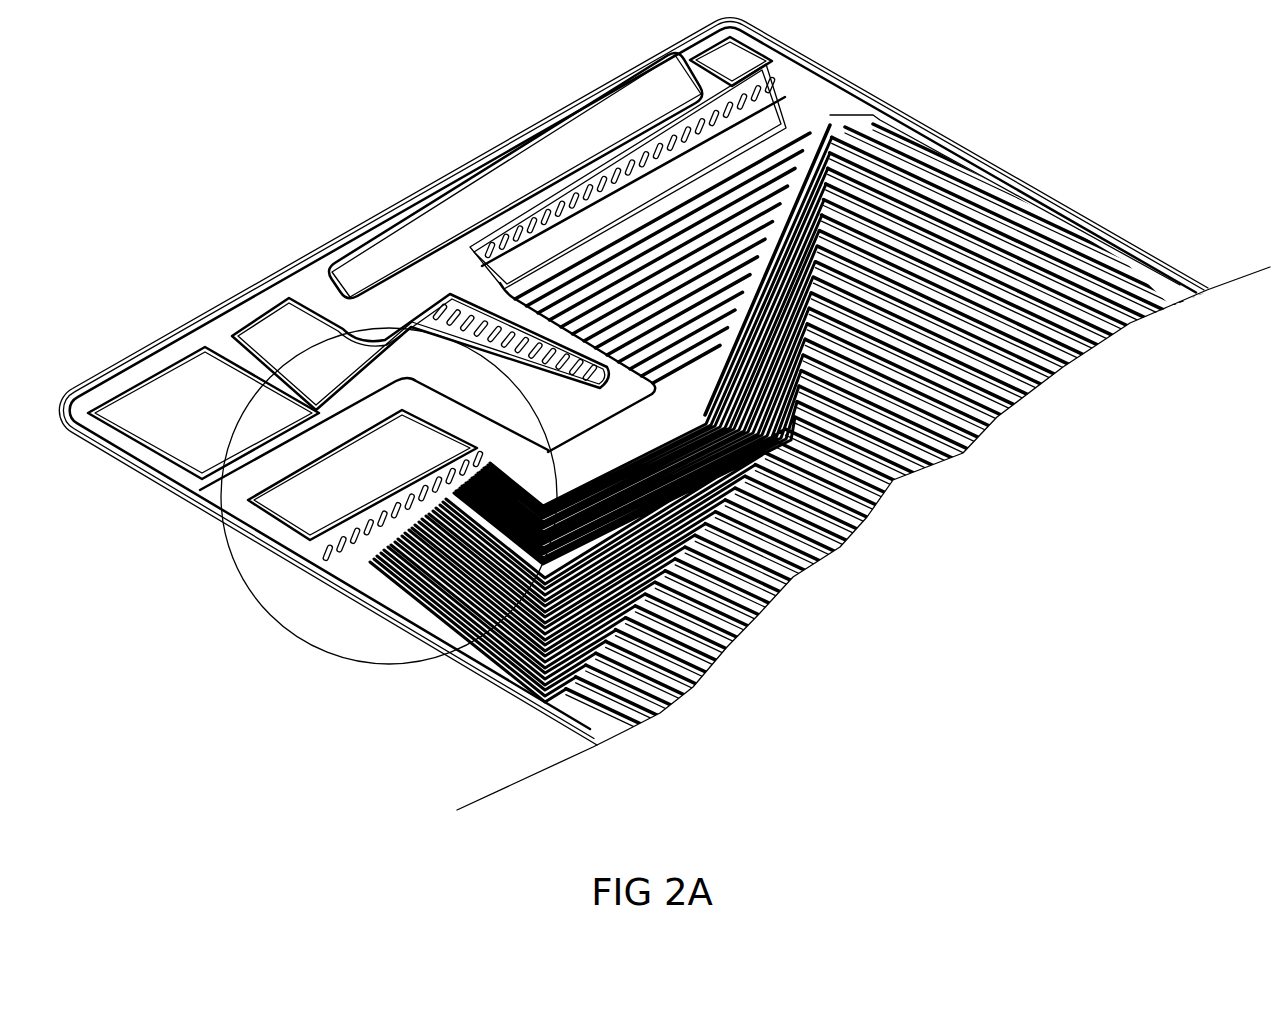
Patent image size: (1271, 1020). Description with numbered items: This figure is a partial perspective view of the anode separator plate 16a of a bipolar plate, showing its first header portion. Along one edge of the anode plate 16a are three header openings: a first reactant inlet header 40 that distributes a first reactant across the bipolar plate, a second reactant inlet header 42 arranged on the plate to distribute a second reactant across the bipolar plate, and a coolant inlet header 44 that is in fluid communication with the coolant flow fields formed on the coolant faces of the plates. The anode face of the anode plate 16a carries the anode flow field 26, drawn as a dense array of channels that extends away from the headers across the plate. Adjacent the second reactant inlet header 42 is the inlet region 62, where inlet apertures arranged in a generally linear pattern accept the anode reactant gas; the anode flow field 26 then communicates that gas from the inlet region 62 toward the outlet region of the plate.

The anode separator plate 16a is at (993, 70).
The first reactant inlet header 40 is at (553, 167).
The coolant inlet header 44 is at (287, 337).
The second reactant inlet header 42 is at (290, 513).
The anode flow field 26 is at (1060, 252).
The inlet region 62 is at (290, 592).